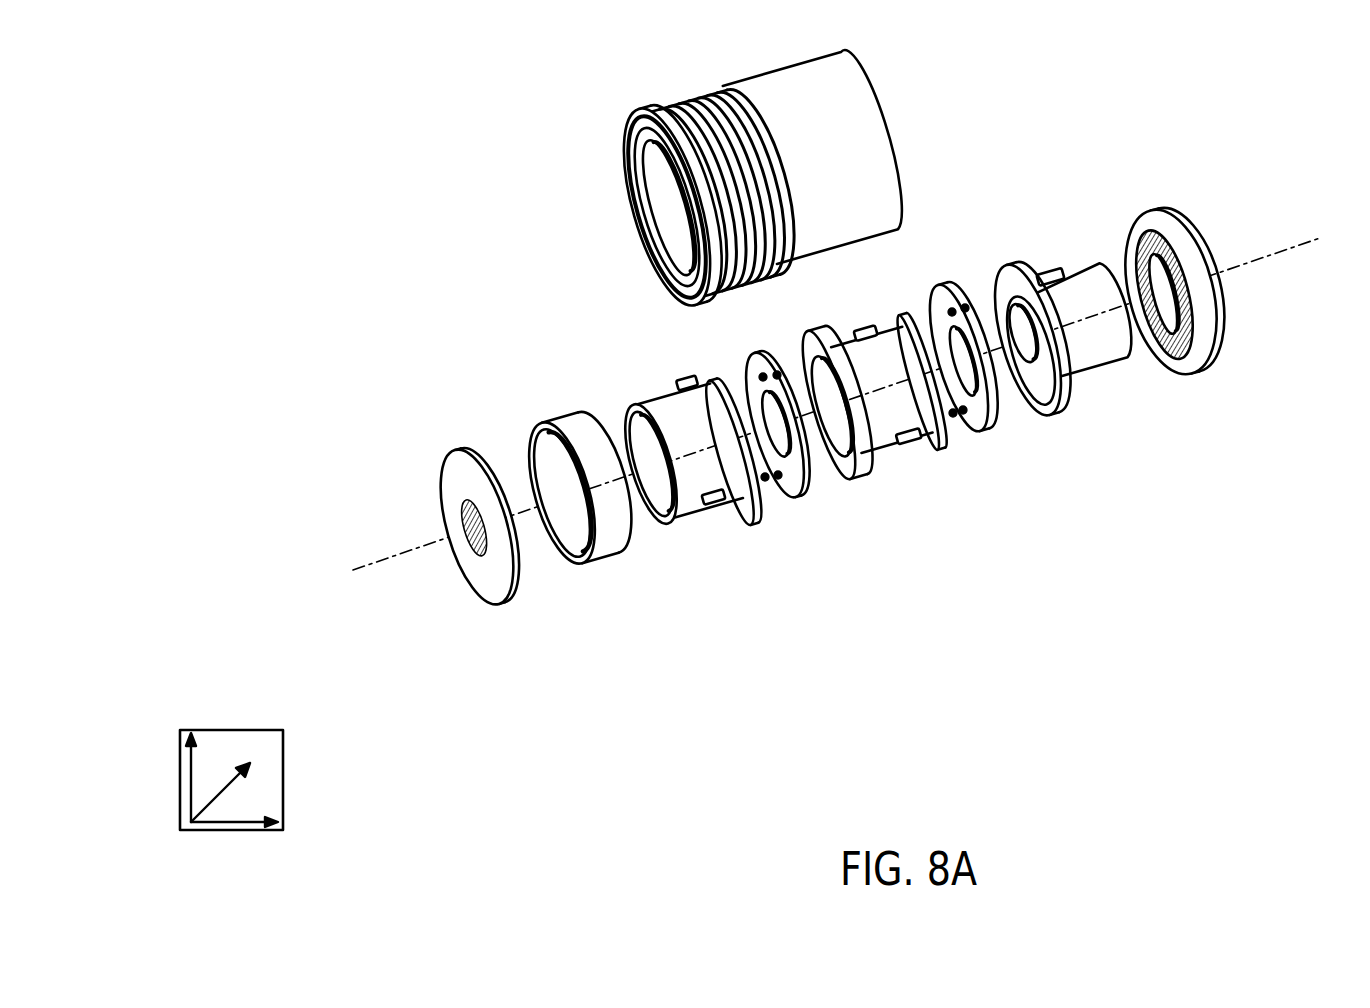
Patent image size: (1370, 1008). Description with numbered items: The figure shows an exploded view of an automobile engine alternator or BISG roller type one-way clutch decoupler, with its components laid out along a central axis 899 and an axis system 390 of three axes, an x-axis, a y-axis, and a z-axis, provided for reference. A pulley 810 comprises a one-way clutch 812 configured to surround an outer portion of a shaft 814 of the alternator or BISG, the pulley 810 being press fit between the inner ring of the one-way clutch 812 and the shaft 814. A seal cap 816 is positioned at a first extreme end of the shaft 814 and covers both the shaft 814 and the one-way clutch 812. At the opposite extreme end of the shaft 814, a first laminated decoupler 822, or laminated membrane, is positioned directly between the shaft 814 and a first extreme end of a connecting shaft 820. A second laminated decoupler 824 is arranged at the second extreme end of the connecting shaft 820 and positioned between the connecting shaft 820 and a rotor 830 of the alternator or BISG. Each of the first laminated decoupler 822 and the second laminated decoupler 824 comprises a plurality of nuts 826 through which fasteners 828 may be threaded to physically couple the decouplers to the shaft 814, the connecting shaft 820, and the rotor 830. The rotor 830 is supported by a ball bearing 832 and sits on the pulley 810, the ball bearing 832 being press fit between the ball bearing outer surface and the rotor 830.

The pulley 810 is at (742, 80).
The one-way clutch 812 is at (556, 422).
The shaft 814 is at (693, 517).
The seal cap 816 is at (507, 607).
The connecting shaft 820 is at (893, 450).
The first laminated decoupler 822 is at (805, 500).
The second laminated decoupler 824 is at (1000, 435).
The nuts 826 is at (1003, 330).
The fasteners 828 is at (1062, 270).
The rotor 830 is at (1090, 370).
The ball bearing 832 is at (1197, 362).
The central axis 899 is at (400, 556).
The axis system 390 is at (283, 750).